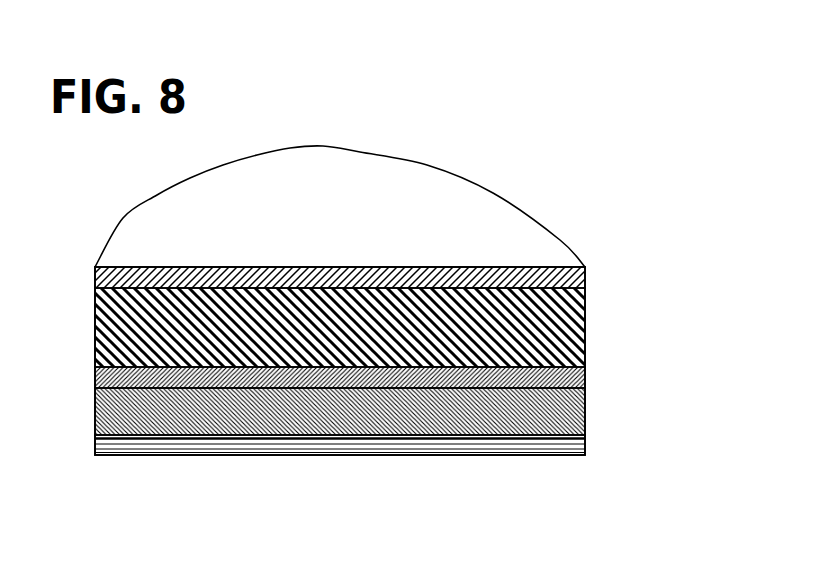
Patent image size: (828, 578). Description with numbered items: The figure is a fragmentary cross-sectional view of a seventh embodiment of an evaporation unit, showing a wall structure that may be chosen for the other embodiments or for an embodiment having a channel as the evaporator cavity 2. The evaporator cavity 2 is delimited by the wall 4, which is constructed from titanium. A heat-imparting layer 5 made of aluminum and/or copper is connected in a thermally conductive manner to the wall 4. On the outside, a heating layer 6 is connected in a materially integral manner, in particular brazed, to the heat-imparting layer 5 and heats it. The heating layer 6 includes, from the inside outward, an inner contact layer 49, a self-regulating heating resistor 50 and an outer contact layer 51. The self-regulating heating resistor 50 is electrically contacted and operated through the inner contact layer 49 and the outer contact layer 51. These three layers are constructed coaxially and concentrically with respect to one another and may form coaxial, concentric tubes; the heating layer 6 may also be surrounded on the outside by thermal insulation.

The evaporator cavity 2 is at (448, 213).
The wall 4 is at (585, 278).
The heat-imparting layer 5 is at (585, 322).
The heating layer 6 is at (329, 424).
The inner contact layer 49 is at (95, 377).
The self-regulating heating resistor 50 is at (122, 410).
The outer contact layer 51 is at (95, 443).